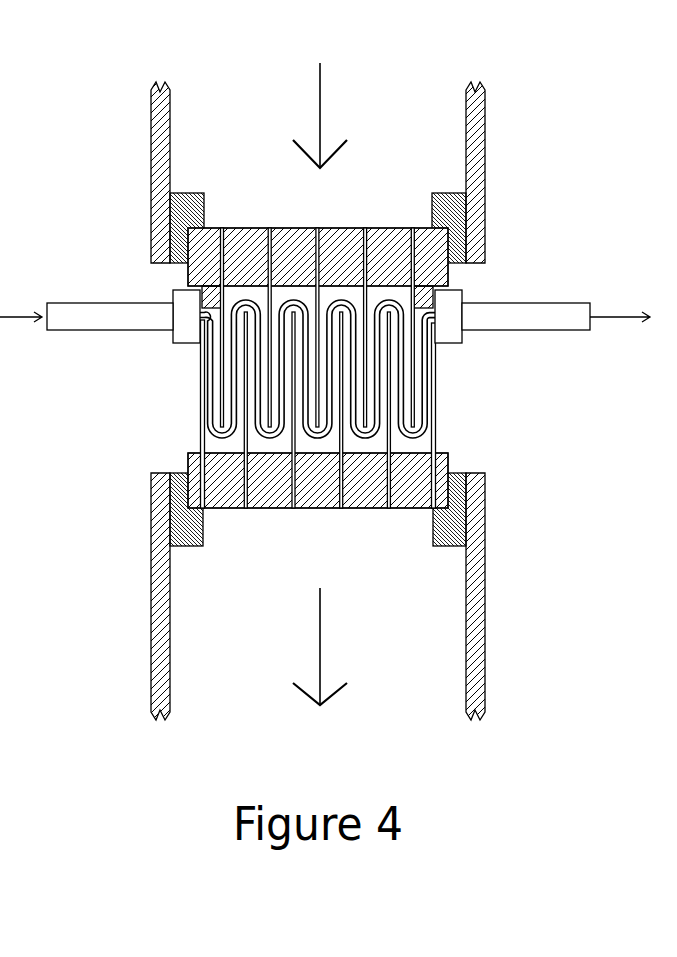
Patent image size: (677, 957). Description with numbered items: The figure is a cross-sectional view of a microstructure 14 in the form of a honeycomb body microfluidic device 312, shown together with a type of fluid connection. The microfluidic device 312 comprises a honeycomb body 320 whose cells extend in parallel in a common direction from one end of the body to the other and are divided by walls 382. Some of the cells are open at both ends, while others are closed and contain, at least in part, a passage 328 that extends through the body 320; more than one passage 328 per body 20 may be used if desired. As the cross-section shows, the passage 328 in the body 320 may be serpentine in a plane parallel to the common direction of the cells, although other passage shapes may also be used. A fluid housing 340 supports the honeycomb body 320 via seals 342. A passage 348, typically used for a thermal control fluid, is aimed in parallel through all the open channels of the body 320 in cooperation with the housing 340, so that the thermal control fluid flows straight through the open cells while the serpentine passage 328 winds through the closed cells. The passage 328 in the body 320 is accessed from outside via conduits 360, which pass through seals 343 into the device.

The fluid housing 340 is at (152, 163).
The seals 342 is at (442, 216).
The walls 382 is at (317, 263).
The honeycomb body 320 is at (200, 383).
The seals 343 is at (187, 336).
The conduits 360 is at (128, 326).
The passage 328 is at (1, 318).
The passage 348 is at (320, 105).
The microstructure 14 is at (533, 678).
The microfluidic device 312 is at (19, 745).
The body 20 is at (15, 606).